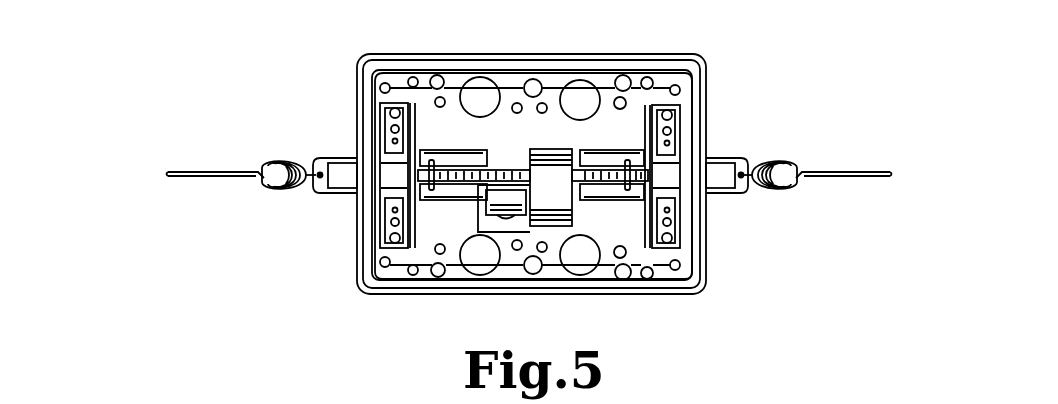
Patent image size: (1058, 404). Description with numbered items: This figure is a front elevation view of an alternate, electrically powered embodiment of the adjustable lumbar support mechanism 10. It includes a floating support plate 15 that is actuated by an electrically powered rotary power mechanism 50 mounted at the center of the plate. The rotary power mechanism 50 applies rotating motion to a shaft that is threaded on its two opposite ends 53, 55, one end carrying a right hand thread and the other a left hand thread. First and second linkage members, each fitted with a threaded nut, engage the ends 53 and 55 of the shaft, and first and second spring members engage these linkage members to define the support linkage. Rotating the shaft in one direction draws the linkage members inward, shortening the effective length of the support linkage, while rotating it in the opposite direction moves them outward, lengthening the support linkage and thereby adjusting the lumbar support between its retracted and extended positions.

The lumbar support mechanism 10 is at (755, 70).
The floating support plate 15 is at (538, 60).
The rotary power mechanism 50 is at (557, 205).
The threaded shaft end 53 is at (395, 205).
The threaded shaft end 55 is at (690, 214).